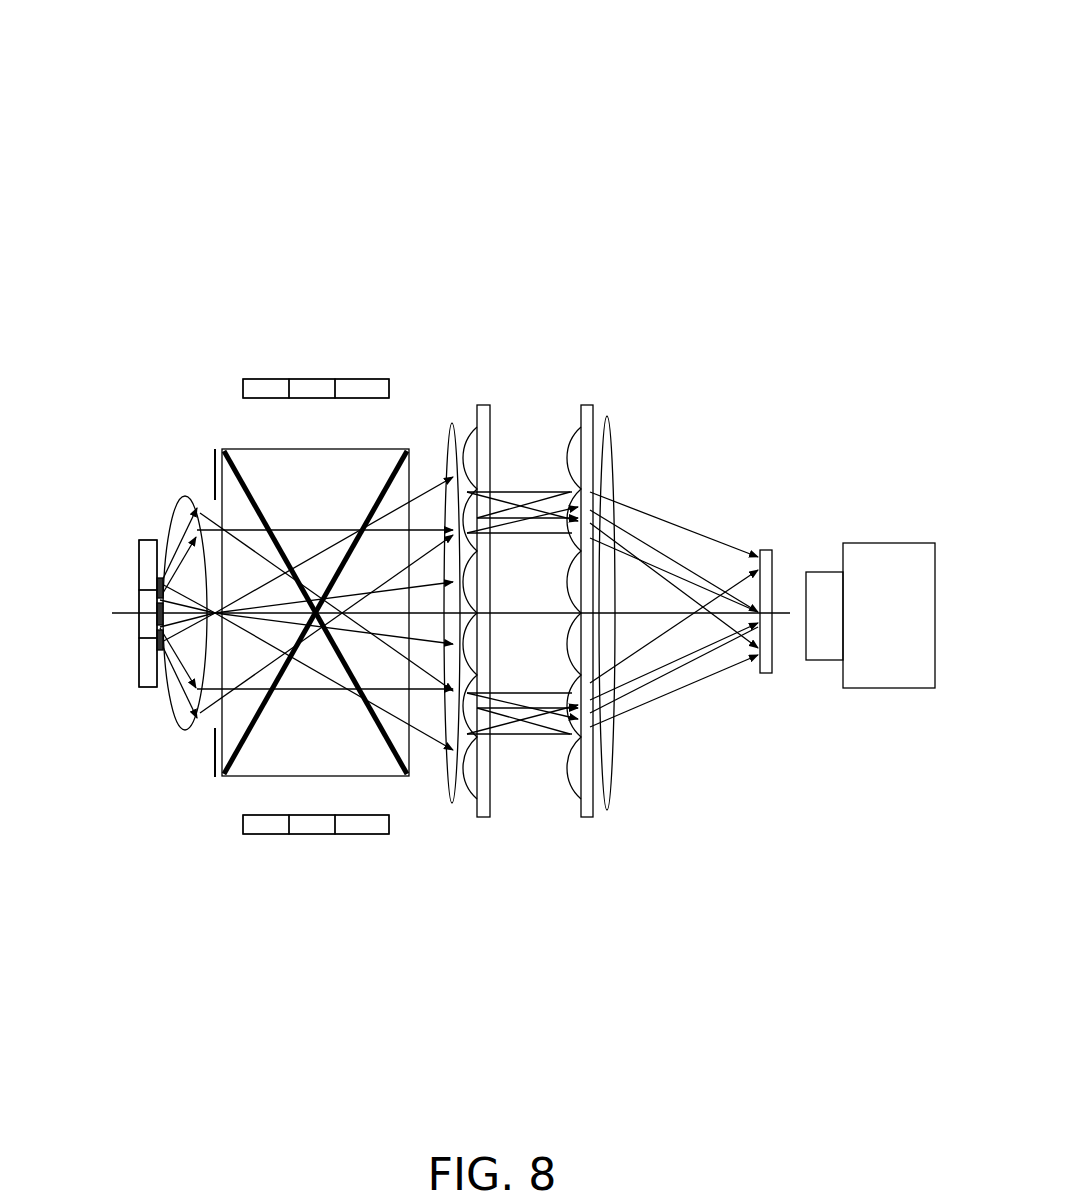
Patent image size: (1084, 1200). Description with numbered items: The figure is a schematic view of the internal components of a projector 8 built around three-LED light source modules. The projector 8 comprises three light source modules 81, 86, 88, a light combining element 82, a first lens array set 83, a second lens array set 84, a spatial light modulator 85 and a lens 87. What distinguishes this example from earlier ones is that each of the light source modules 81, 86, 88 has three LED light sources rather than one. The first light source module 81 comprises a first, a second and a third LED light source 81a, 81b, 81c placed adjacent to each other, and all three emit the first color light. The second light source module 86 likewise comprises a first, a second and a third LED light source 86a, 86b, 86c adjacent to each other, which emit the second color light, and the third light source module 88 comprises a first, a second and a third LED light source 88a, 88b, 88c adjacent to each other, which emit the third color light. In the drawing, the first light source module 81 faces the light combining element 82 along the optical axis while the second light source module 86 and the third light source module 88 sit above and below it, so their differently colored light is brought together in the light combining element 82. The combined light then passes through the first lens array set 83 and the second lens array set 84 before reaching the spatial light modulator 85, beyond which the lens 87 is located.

The projector 8 is at (406, 90).
The first light source module 81 is at (108, 590).
The first LED light source 81a is at (138, 573).
The second LED light source 81b is at (139, 634).
The third LED light source 81c is at (148, 690).
The light combining element 82 is at (283, 449).
The first lens array set 83 is at (466, 447).
The second lens array set 84 is at (583, 405).
The spatial light modulator 85 is at (753, 686).
The second light source module 86 is at (385, 311).
The first LED light source 86a is at (263, 386).
The second LED light source 86b is at (313, 386).
The third LED light source 86c is at (364, 386).
The lens 87 is at (875, 543).
The third light source module 88 is at (385, 899).
The first LED light source 88a is at (262, 826).
The second LED light source 88b is at (312, 826).
The third LED light source 88c is at (362, 826).